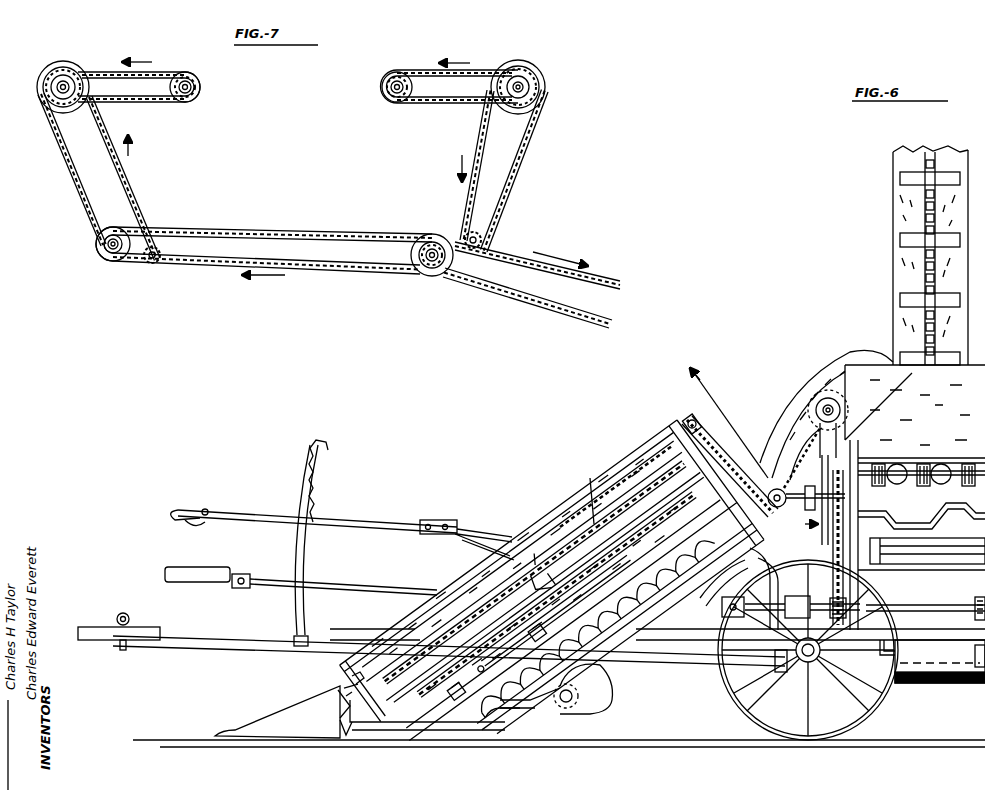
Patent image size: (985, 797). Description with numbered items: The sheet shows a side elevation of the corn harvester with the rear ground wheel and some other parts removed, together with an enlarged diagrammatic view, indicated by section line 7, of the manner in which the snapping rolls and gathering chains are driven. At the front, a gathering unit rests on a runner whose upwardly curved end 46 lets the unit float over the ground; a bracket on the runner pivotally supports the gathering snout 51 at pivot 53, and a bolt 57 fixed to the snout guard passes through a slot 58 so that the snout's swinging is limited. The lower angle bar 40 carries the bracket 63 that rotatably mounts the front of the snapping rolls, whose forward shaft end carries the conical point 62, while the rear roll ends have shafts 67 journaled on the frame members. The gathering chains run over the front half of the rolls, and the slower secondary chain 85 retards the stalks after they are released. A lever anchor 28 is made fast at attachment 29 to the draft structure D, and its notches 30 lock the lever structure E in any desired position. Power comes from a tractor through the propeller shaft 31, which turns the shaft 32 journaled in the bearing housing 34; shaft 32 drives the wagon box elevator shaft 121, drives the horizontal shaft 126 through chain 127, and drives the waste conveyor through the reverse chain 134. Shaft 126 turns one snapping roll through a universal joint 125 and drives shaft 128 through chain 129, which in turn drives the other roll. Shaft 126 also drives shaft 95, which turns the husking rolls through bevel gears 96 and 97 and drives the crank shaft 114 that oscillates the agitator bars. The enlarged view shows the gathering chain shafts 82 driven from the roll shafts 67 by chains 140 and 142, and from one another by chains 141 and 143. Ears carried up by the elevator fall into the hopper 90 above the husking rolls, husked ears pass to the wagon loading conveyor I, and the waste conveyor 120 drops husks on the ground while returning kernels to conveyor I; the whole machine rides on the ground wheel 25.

In FIG. 6, the section line 7 is at (740, 449).
In FIG. 6, the wheel 25 is at (878, 706).
In FIG. 6, the lever anchor 28 is at (306, 549).
In FIG. 6, the anchor attachment 29 is at (298, 646).
In FIG. 6, the notches 30 is at (314, 468).
In FIG. 6, the propeller shaft 31 is at (404, 592).
In FIG. 6, the shaft 32 is at (819, 413).
In FIG. 6, the bearing housing 34 is at (797, 600).
In FIG. 6, the lower angle bar 40 is at (698, 598).
In FIG. 6, the curved end 46 is at (338, 708).
In FIG. 6, the gathering snout 51 is at (274, 706).
In FIG. 6, the pivot 53 is at (346, 736).
In FIG. 6, the bolt 57 is at (350, 690).
In FIG. 6, the slot 58 is at (350, 680).
In FIG. 6, the conical point 62 is at (494, 726).
In FIG. 6, the bracket 63 is at (525, 708).
In FIG. 7, the roll shaft 67 is at (160, 256).
In FIG. 7, the shaft 82 is at (67, 84).
In FIG. 6, the shaft 82 is at (626, 470).
In FIG. 6, the secondary chain 85 is at (585, 493).
In FIG. 6, the hopper 90 is at (915, 304).
In FIG. 6, the shaft 95 is at (962, 486).
In FIG. 6, the bevel gear 96 is at (895, 485).
In FIG. 6, the bevel gear 97 is at (880, 486).
In FIG. 6, the crank shaft 114 is at (935, 521).
In FIG. 6, the waste conveyor 120 is at (935, 556).
In FIG. 6, the wagon box elevator shaft 121 is at (880, 655).
In FIG. 6, the universal joint 125 is at (777, 508).
In FIG. 7, the shaft 126 is at (432, 264).
In FIG. 7, the chain 127 is at (562, 311).
In FIG. 6, the chain 127 is at (832, 538).
In FIG. 7, the shaft 128 is at (104, 251).
In FIG. 6, the shaft 128 is at (789, 503).
In FIG. 7, the chain 129 is at (275, 233).
In FIG. 6, the chain 129 is at (791, 478).
In FIG. 6, the reverse chain 134 is at (846, 582).
In FIG. 7, the chain 140 is at (86, 172).
In FIG. 6, the chain 140 is at (730, 440).
In FIG. 7, the chain 141 is at (146, 104).
In FIG. 6, the chain 141 is at (693, 418).
In FIG. 7, the chain 142 is at (521, 166).
In FIG. 7, the chain 143 is at (431, 104).
In FIG. 6, the draft structure D is at (220, 634).
In FIG. 6, the lever structure E is at (384, 516).
In FIG. 6, the wagon loading conveyor I is at (918, 682).